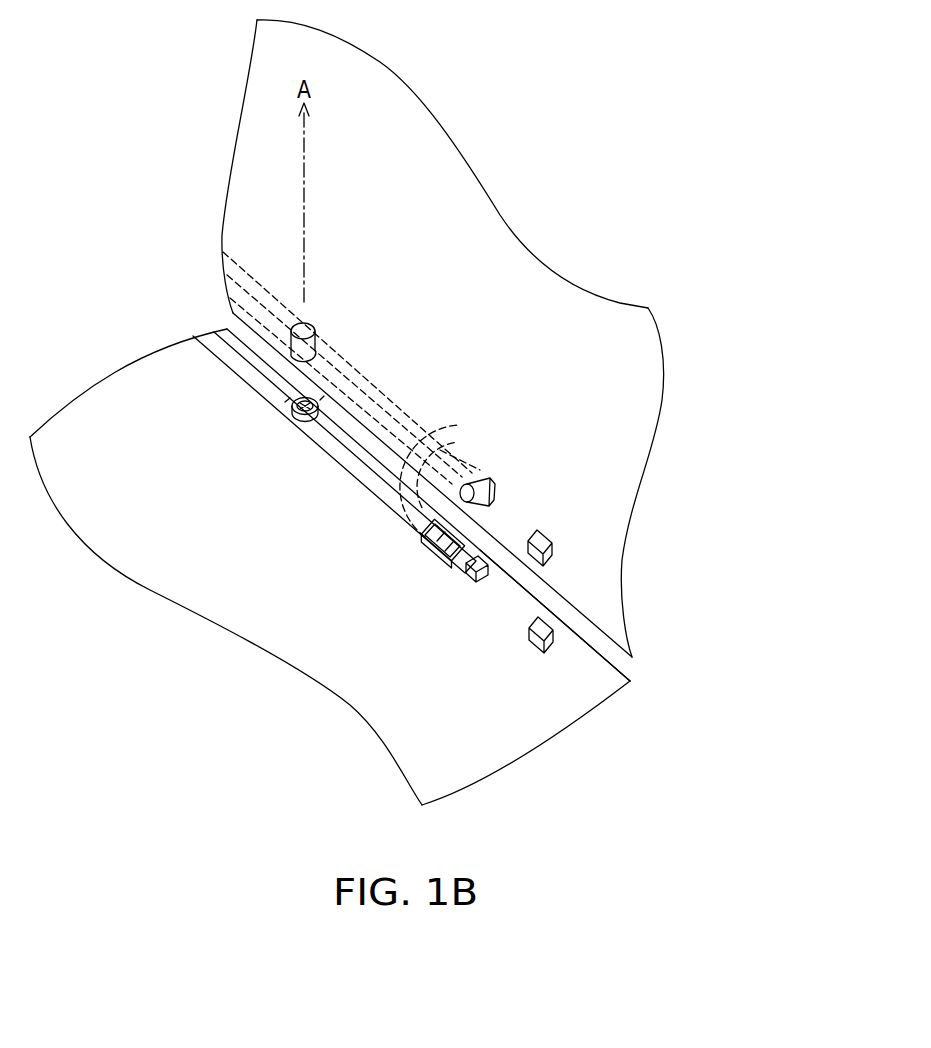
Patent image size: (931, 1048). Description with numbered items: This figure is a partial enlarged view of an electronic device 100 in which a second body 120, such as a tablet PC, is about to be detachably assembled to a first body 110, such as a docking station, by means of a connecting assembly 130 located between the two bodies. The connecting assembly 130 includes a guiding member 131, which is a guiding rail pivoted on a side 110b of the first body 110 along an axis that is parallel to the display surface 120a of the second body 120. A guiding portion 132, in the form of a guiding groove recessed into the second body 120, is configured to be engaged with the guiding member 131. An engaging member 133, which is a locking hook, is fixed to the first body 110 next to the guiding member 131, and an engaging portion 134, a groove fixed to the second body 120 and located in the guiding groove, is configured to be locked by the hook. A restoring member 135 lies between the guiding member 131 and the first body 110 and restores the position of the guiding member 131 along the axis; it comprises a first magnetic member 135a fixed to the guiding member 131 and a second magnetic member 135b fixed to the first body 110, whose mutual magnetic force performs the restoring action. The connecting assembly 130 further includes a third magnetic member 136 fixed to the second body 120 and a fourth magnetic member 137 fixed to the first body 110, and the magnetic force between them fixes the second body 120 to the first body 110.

The electronic device 100 is at (658, 823).
The first body 110 is at (114, 342).
The side of the first body 110b is at (630, 673).
The second body 120 is at (154, 110).
The display surface 120a is at (232, 233).
The connecting assembly 130 is at (776, 427).
The guiding member 131 is at (472, 552).
The guiding portion 132 is at (490, 466).
The engaging member 133 is at (488, 572).
The engaging portion 134 is at (556, 544).
The restoring member 135 is at (728, 412).
The first magnetic member 135a is at (497, 492).
The second magnetic member 135b is at (473, 477).
The third magnetic member 136 is at (520, 548).
The fourth magnetic member 137 is at (555, 630).